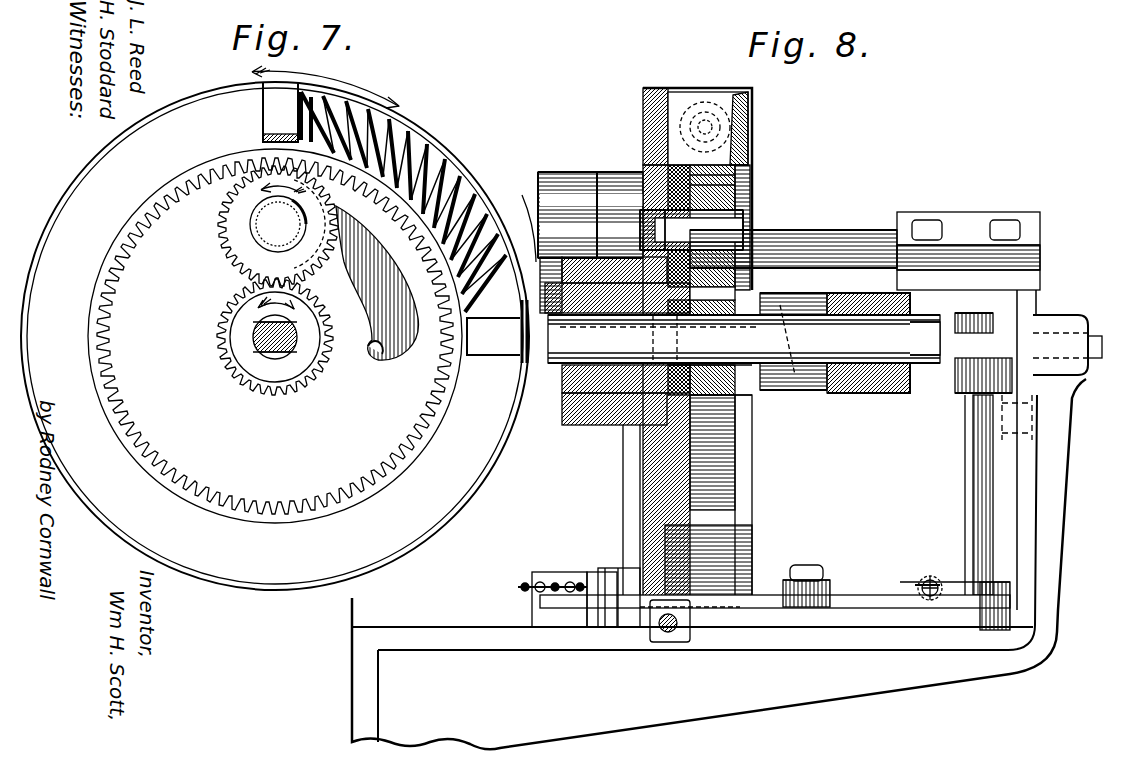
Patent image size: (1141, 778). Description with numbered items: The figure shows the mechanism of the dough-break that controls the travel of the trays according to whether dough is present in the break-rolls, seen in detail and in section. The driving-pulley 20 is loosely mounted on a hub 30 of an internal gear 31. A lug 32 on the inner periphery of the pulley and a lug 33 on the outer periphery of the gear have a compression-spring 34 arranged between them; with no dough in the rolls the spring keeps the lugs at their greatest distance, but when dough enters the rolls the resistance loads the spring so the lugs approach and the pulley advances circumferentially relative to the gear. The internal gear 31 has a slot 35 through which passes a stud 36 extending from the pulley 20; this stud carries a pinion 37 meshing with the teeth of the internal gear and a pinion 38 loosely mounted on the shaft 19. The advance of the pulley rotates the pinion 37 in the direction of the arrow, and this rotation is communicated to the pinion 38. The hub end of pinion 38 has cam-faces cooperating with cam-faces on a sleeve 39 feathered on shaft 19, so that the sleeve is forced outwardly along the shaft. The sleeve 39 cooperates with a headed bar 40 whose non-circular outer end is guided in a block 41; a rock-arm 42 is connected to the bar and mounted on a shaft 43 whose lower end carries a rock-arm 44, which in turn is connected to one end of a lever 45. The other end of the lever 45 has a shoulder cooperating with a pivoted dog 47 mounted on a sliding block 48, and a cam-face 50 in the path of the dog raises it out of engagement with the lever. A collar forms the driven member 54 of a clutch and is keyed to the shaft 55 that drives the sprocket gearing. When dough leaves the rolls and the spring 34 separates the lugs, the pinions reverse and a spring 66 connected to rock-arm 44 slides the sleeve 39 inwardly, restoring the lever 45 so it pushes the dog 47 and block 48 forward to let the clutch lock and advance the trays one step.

In FIG. 8, the shaft 19 is at (744, 339).
In FIG. 7, the driving-pulley 20 is at (216, 95).
In FIG. 8, the driving-pulley 20 is at (655, 90).
In FIG. 7, the hub 30 is at (536, 262).
In FIG. 8, the hub 30 is at (582, 375).
In FIG. 7, the internal gear 31 is at (278, 500).
In FIG. 8, the internal gear 31 is at (722, 520).
In FIG. 7, the lug 32 is at (262, 129).
In FIG. 8, the lug 32 is at (733, 120).
In FIG. 7, the lug 33 is at (500, 345).
In FIG. 7, the compression-spring 34 is at (455, 256).
In FIG. 8, the compression-spring 34 is at (645, 122).
In FIG. 7, the slot 35 is at (372, 358).
In FIG. 8, the slot 35 is at (690, 212).
In FIG. 7, the stud 36 is at (278, 224).
In FIG. 8, the stud 36 is at (735, 225).
In FIG. 7, the pinion 37 is at (237, 248).
In FIG. 8, the pinion 37 is at (752, 178).
In FIG. 7, the pinion 38 is at (300, 372).
In FIG. 8, the pinion 38 is at (705, 305).
In FIG. 7, the sleeve 39 is at (266, 372).
In FIG. 8, the sleeve 39 is at (812, 395).
In FIG. 7, the headed bar 40 is at (268, 337).
In FIG. 8, the headed bar 40 is at (918, 350).
In FIG. 8, the block 41 is at (1062, 325).
In FIG. 8, the rock-arm 42 is at (985, 340).
In FIG. 8, the shaft 43 is at (975, 500).
In FIG. 8, the rock-arm 44 is at (936, 578).
In FIG. 8, the lever 45 is at (830, 593).
In FIG. 8, the pivoted dog 47 is at (630, 627).
In FIG. 8, the sliding block 48 is at (672, 612).
In FIG. 8, the cam-face 50 is at (598, 622).
In FIG. 8, the driven member of clutch 54 is at (674, 226).
In FIG. 8, the shaft 55 is at (842, 250).
In FIG. 8, the spring 66 is at (920, 582).